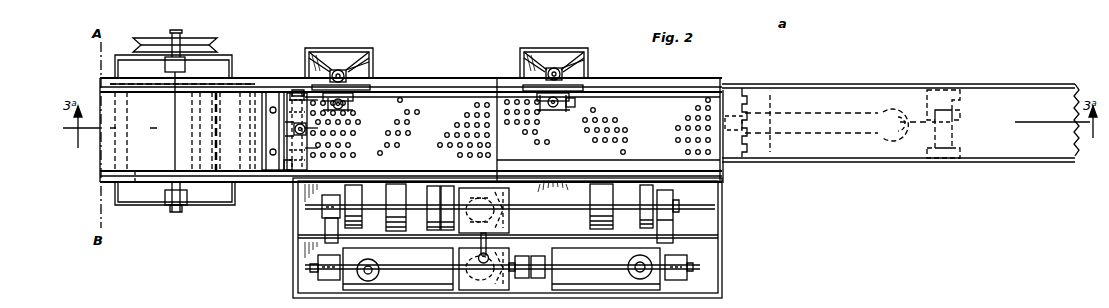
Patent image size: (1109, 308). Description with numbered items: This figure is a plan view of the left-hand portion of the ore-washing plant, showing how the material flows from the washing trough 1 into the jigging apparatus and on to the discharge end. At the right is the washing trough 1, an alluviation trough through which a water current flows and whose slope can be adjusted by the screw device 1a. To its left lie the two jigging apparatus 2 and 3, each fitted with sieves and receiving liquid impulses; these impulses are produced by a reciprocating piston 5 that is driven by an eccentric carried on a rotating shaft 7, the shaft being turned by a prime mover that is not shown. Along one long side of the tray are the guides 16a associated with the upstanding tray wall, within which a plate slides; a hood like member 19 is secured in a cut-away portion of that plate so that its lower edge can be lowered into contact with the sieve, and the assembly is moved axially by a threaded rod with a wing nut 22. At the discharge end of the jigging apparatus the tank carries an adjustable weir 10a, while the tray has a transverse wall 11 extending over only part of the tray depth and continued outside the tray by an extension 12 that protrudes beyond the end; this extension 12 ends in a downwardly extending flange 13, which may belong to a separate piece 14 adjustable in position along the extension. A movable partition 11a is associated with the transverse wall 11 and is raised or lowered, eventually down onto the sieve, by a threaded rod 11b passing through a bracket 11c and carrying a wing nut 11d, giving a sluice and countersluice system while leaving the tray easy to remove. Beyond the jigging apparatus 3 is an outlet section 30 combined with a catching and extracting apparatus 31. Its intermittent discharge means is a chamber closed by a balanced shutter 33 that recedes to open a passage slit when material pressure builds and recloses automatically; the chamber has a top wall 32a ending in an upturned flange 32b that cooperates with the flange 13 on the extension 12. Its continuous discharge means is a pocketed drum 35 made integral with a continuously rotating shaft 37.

The washing trough 1 is at (1004, 147).
The screw device 1a is at (855, 138).
The jigging apparatus 2 is at (634, 98).
The jigging apparatus 3 is at (459, 102).
The reciprocating piston 5 is at (507, 243).
The rotating shaft 7 is at (544, 207).
The adjustable weir 10a is at (272, 93).
The transverse wall 11 is at (284, 120).
The movable partition 11a is at (320, 148).
The threaded rod 11b is at (320, 128).
The bracket 11c is at (298, 90).
The wing nut 11d is at (320, 100).
The extension 12 is at (290, 163).
The downwardly extending flange 13 is at (257, 150).
The separate piece 14 is at (268, 103).
The guides 16a is at (576, 98).
The hood like member 19 is at (540, 110).
The wing nut 22 is at (574, 100).
The outlet section 30 is at (226, 98).
The catching and/or extracting apparatus 31 is at (184, 115).
The top wall 32a is at (238, 160).
The upturned flange 32b is at (272, 170).
The shutter 33 is at (220, 134).
The drum 35 is at (148, 184).
The shaft 37 is at (177, 212).